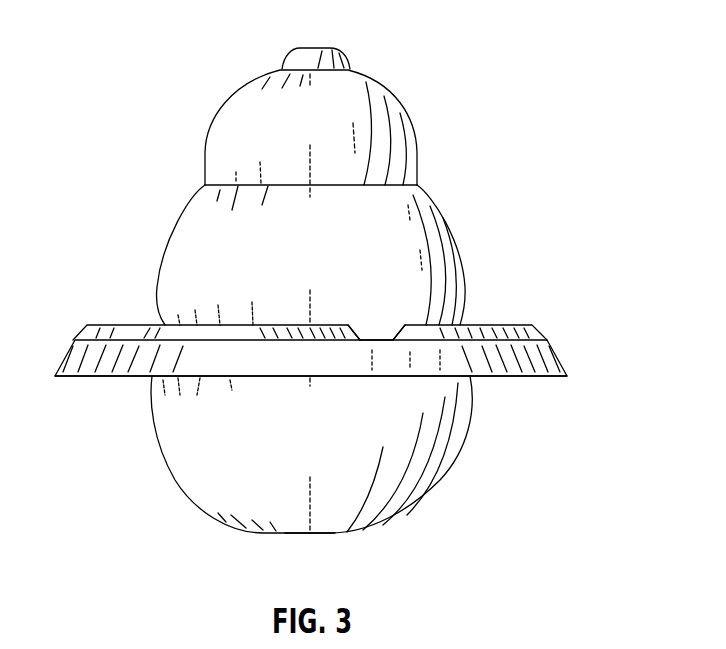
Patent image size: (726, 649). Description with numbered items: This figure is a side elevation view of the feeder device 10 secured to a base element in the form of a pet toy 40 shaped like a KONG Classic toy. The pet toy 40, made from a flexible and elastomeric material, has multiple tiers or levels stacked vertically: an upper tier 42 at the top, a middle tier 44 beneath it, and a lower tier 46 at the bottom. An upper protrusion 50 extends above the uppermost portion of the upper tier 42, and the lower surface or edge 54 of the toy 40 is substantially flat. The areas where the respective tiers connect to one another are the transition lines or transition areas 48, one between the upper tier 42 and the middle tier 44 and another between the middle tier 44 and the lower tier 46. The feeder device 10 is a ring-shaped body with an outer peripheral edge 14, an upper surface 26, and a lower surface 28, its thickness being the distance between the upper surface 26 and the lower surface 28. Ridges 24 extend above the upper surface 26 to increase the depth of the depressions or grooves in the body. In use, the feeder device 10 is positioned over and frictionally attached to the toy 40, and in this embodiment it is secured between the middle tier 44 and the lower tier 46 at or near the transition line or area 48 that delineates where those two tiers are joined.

The feeder device 10 is at (334, 304).
The outer peripheral edge 14 is at (78, 357).
The ridges 24 is at (155, 333).
The upper surface 26 is at (247, 325).
The lower surface 28 is at (90, 376).
The pet toy 40 is at (354, 304).
The upper tier 42 is at (288, 134).
The middle tier 44 is at (298, 277).
The lower tier 46 is at (296, 448).
The transition lines or transition areas 48 is at (329, 60).
The upper protrusion 50 is at (302, 63).
The lower surface or edge 54 is at (310, 533).